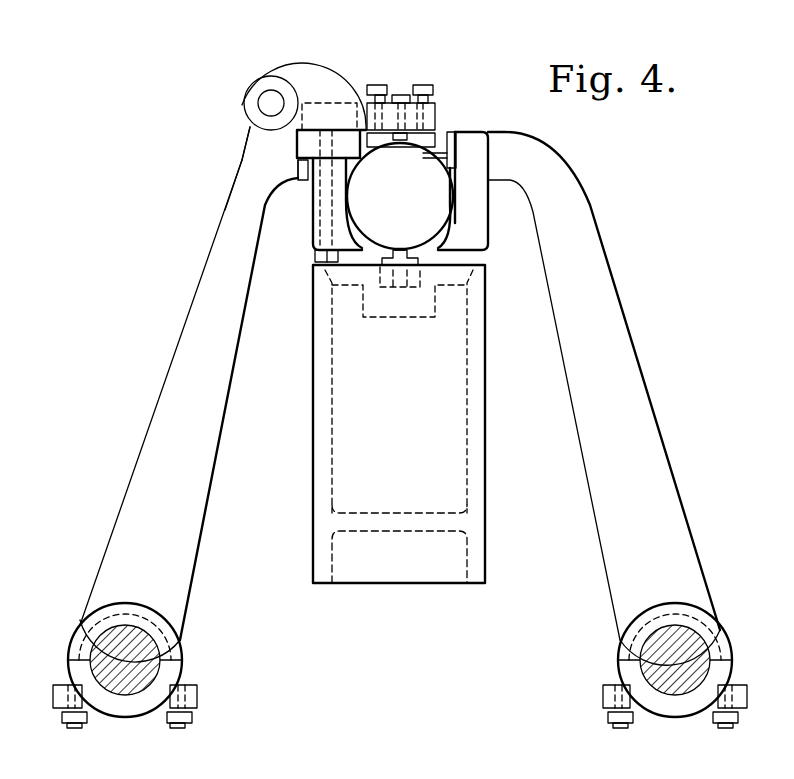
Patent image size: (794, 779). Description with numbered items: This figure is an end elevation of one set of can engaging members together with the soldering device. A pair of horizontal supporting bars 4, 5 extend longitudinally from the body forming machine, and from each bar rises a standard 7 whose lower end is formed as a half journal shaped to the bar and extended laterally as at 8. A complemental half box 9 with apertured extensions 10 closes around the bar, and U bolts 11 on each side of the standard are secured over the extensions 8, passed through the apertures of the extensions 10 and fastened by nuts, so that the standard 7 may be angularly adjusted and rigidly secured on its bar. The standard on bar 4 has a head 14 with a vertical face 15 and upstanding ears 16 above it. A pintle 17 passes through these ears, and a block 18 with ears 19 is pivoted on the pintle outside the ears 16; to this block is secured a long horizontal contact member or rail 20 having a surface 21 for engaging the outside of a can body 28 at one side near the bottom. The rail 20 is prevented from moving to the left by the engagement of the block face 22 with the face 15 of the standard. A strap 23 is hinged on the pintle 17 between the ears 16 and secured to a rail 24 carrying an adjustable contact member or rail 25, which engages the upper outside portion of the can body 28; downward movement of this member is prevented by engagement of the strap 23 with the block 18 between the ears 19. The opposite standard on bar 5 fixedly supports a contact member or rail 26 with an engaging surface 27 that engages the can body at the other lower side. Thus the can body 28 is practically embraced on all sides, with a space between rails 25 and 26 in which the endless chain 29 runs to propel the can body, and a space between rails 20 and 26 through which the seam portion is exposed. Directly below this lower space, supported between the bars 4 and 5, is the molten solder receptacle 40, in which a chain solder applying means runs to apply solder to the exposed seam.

The supporting bar 4 is at (135, 680).
The supporting bar 5 is at (685, 680).
The standard 7 is at (175, 356).
The lateral extension of half journal 8 is at (92, 630).
The complemental half box 9 is at (123, 715).
The extension 10 is at (62, 708).
The U bolt 11 is at (178, 730).
The head 14 is at (240, 160).
The vertical face 15 is at (293, 157).
The upstanding ear 16 is at (248, 130).
The pintle 17 is at (270, 102).
The block 18 is at (340, 148).
The ear of block 19 is at (305, 72).
The contact member or rail 20 is at (320, 237).
The engaging surface 21 is at (357, 242).
The block face 22 is at (303, 182).
The strap 23 is at (318, 115).
The rail 24 is at (412, 120).
The adjustable contact member or rail 25 is at (437, 140).
The contact member or rail 26 is at (470, 222).
The engaging surface 27 is at (440, 242).
The can body 28 is at (400, 196).
The endless chain 29 is at (452, 150).
The molten solder receptacle 40 is at (399, 424).